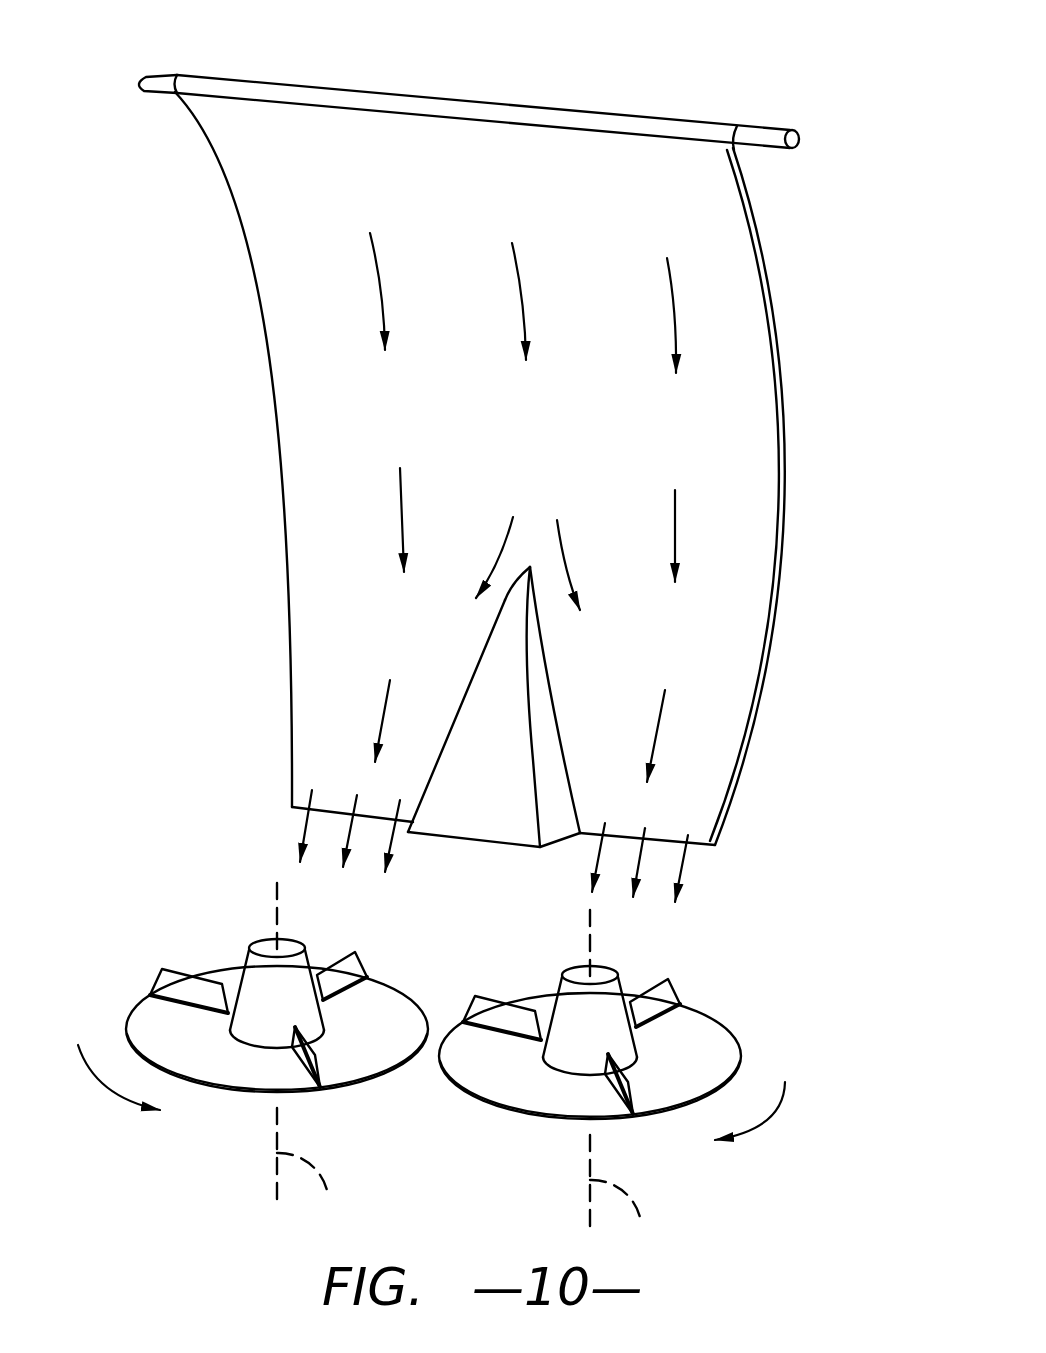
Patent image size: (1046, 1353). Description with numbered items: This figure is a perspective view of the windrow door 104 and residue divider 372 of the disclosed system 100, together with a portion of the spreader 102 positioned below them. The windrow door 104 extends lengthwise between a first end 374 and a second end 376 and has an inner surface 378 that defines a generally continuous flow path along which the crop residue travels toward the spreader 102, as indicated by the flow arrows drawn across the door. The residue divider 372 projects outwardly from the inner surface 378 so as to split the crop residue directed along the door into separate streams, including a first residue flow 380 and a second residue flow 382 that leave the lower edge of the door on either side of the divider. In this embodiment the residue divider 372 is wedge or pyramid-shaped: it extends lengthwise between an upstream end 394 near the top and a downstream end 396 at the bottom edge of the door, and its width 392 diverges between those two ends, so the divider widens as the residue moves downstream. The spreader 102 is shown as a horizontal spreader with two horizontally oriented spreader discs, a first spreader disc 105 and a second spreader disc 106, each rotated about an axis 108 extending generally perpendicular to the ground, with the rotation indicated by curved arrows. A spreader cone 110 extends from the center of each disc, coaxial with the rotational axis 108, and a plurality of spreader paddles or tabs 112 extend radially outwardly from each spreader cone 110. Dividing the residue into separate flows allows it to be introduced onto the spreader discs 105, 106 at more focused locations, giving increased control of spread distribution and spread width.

The system 100 is at (784, 92).
The spreader 102 is at (98, 910).
The windrow door 104 is at (270, 461).
The first spreader disc 105 is at (242, 1060).
The second spreader disc 106 is at (527, 1083).
The axis 108 is at (475, 1071).
The spreader cone 110 is at (253, 985).
The spreader paddles or tabs 112 is at (177, 987).
The residue divider 372 is at (470, 795).
The first end 374 is at (232, 125).
The second end 376 is at (733, 815).
The inner surface 378 is at (316, 568).
The residue flow 380 is at (305, 827).
The bottom right edge 382 is at (700, 862).
The width 392 is at (423, 692).
The upstream end 394 is at (530, 567).
The downstream end 396 is at (490, 850).